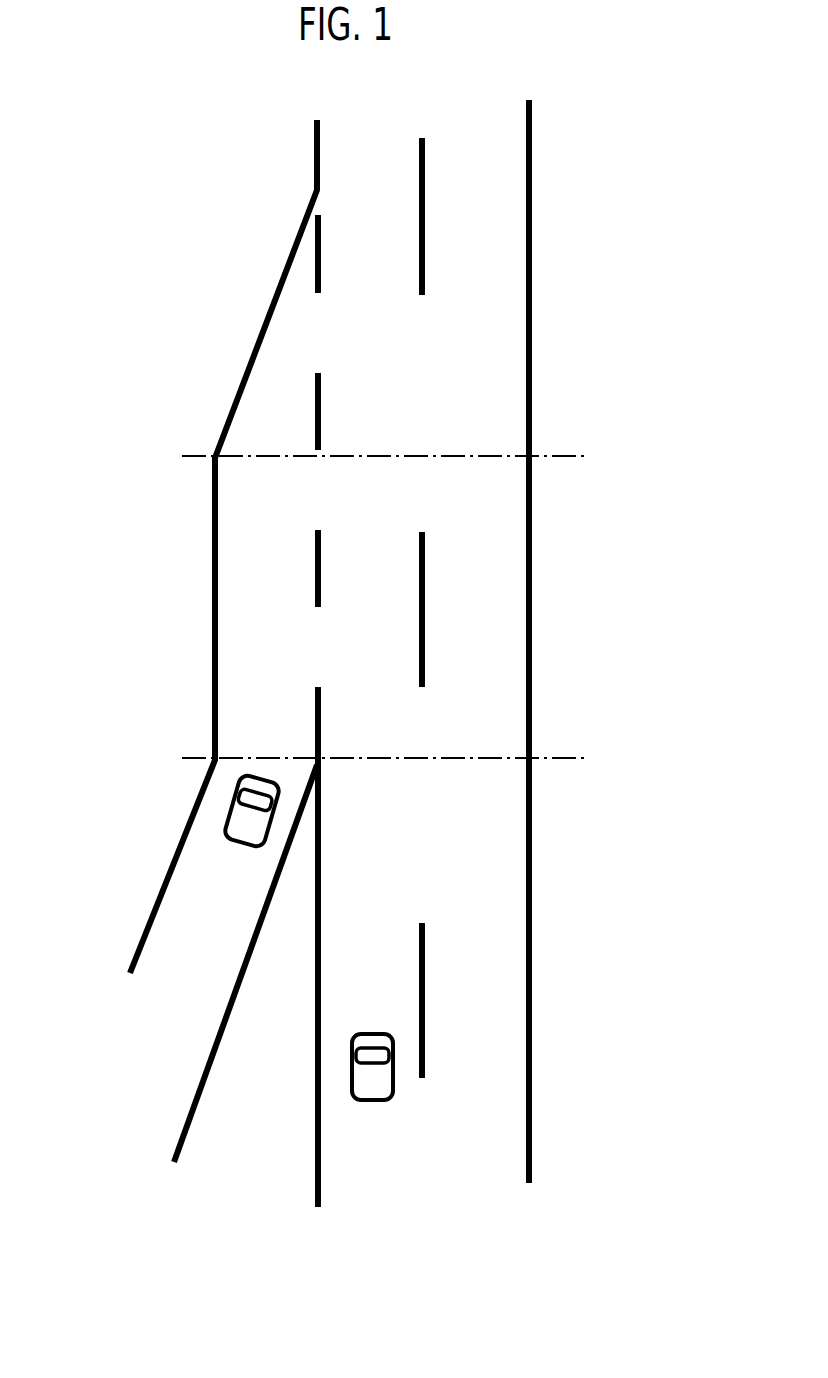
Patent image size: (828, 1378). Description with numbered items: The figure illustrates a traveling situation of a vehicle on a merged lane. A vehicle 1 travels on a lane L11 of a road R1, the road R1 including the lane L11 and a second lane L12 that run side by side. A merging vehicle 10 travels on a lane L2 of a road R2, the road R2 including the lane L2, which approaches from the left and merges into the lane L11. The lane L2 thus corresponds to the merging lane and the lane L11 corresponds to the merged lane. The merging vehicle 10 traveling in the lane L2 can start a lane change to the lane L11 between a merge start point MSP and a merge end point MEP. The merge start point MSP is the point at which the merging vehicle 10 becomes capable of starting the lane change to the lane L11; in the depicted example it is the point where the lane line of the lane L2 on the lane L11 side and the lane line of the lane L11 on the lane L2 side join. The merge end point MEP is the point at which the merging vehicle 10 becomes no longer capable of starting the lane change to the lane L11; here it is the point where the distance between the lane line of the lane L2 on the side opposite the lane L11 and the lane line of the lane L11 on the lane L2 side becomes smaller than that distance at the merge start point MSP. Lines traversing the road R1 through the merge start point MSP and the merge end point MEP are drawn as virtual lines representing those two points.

The vehicle 1 is at (395, 1068).
The merging vehicle 10 is at (228, 815).
The lane L11 is at (373, 1175).
The lane L12 is at (475, 672).
The lane L2 is at (204, 643).
The road R1 is at (422, 709).
The road R2 is at (178, 678).
The merge end point MEP is at (567, 455).
The merge start point MSP is at (560, 758).